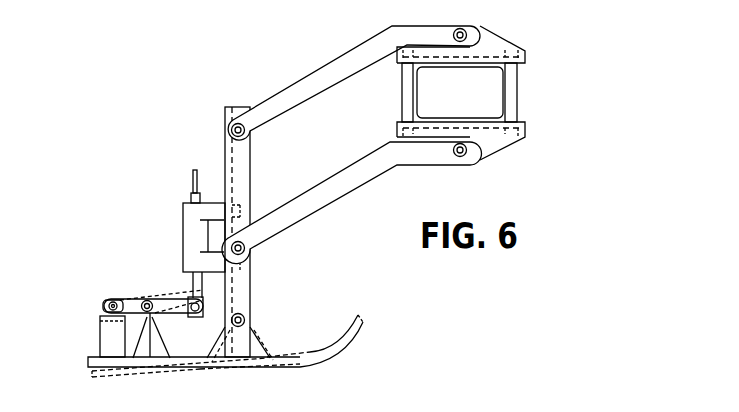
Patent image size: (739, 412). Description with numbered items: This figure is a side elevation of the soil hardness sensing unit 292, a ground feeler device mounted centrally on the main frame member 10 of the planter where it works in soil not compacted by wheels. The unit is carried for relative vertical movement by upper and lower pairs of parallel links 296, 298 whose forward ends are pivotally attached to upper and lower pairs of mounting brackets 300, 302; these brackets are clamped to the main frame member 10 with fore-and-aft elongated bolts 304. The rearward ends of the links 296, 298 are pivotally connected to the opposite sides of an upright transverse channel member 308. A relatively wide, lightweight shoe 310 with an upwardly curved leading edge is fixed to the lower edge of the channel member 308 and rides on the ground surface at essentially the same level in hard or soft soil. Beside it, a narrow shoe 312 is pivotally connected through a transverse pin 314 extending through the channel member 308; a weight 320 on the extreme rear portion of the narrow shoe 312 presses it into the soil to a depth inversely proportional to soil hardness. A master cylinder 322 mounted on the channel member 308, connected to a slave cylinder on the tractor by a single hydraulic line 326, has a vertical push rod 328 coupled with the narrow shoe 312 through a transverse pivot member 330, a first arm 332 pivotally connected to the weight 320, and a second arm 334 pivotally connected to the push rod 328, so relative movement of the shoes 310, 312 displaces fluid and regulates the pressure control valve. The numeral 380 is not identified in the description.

The main frame member 10 is at (505, 100).
The soil hardness sensing unit 292 is at (108, 232).
The upper pair of parallel links 296 is at (317, 90).
The lower pair of parallel links 298 is at (328, 197).
The upper pair of mounting brackets 300 is at (503, 47).
The lower pair of mounting brackets 302 is at (497, 142).
The fore-and-aft elongated bolts 304 is at (508, 82).
The upright transverse channel member 308 is at (243, 170).
The wide shoe 310 is at (350, 345).
The narrow shoe 312 is at (236, 388).
The transverse pin 314 is at (194, 384).
The weight 320 is at (105, 332).
The master cylinder 322 is at (188, 228).
The hydraulic line 326 is at (193, 179).
The push rod 328 is at (193, 277).
The transverse pivot member 330 is at (145, 300).
The first arm 332 is at (122, 300).
The second arm 334 is at (177, 311).
The runner portion 380 is at (93, 407).